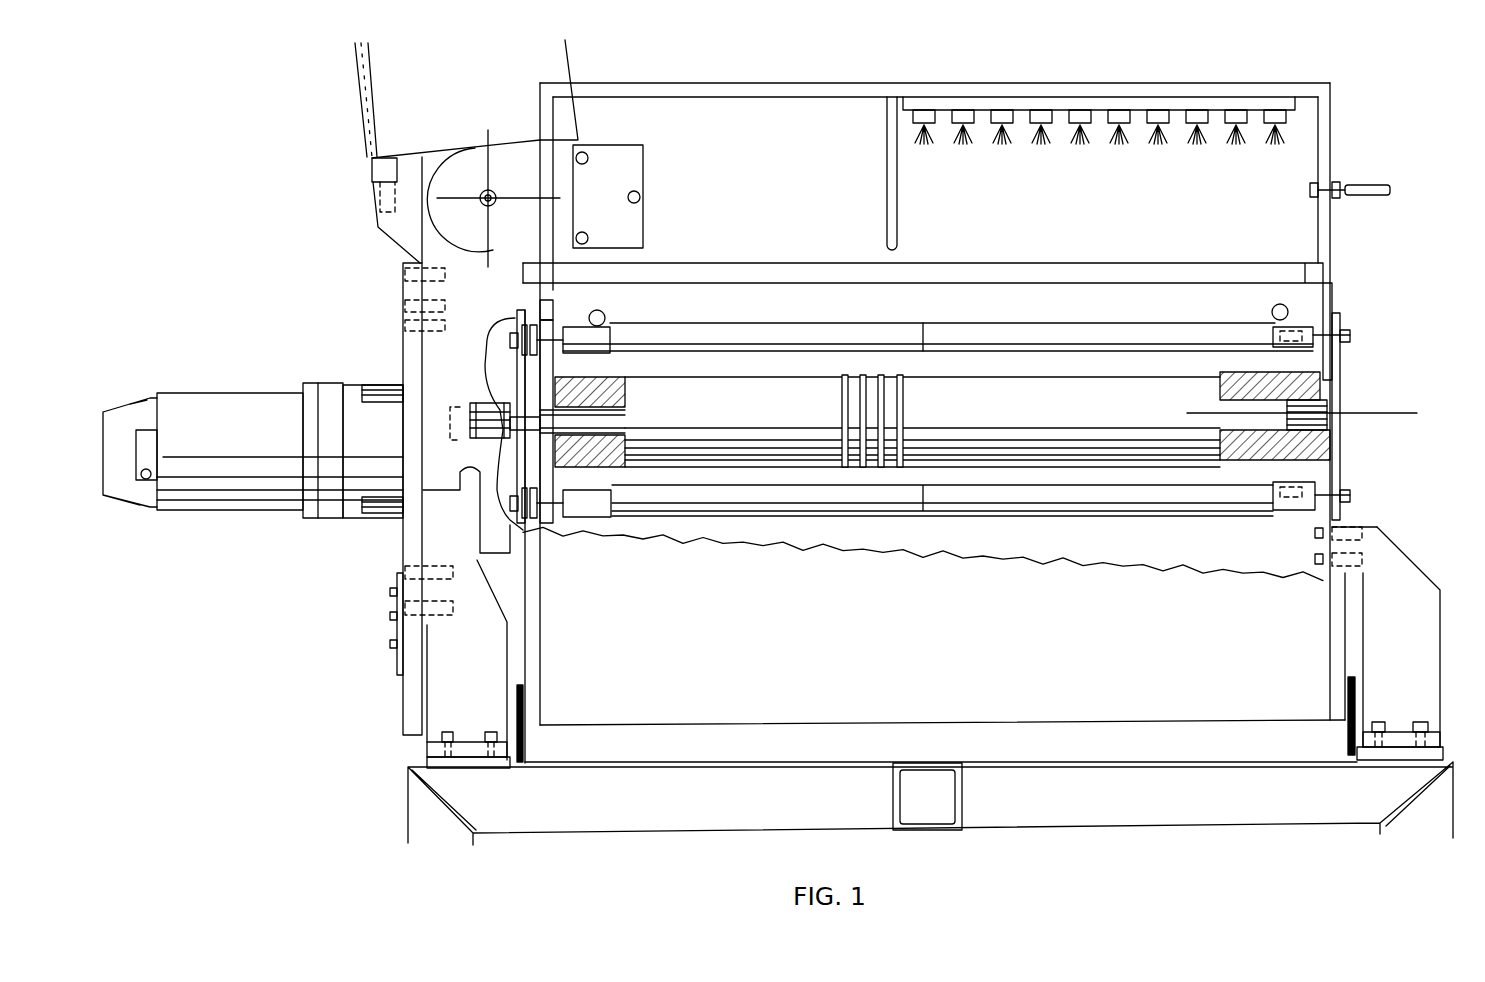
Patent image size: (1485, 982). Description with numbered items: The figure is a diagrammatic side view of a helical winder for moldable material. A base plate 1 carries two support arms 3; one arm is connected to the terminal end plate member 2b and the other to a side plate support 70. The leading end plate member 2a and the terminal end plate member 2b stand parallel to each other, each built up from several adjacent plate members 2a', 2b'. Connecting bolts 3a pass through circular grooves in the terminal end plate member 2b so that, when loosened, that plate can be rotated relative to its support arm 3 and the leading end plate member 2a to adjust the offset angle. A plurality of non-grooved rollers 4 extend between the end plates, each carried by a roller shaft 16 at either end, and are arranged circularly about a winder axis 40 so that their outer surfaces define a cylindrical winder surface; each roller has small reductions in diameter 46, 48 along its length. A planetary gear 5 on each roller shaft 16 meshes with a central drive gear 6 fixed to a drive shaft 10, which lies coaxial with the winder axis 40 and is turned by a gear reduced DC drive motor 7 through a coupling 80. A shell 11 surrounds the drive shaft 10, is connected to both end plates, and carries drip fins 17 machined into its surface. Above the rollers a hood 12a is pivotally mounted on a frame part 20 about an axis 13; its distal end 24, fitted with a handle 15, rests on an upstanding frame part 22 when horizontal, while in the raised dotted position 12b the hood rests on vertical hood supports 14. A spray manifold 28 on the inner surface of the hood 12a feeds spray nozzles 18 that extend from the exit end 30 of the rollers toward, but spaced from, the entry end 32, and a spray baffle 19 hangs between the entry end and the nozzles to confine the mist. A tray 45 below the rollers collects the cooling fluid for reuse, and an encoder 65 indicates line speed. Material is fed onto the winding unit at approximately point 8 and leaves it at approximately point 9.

The base plate 1 is at (618, 822).
The leading end plate member 2a is at (614, 460).
The plate members 2a' is at (630, 268).
The terminal end plate member 2b is at (1372, 416).
The plate members 2b' is at (1372, 331).
The support arms 3 is at (442, 708).
The connecting bolts 3a is at (400, 583).
The rollers 4 is at (1032, 328).
The planetary gear 5 is at (515, 318).
The central drive gear 6 is at (497, 397).
The drive motor 7 is at (195, 510).
The material feed point 8 is at (608, 313).
The material exit point 9 is at (1280, 303).
The drive shaft 10 is at (500, 418).
The shell 11 is at (1173, 380).
The hood 12a is at (863, 85).
The hood in pivoted position 12b is at (388, 127).
The pivot axis 13 is at (432, 178).
The hood supports 14 is at (367, 167).
The handle 15 is at (1392, 185).
The roller shaft 16 is at (1320, 330).
The drip fins 17 is at (893, 465).
The spray nozzles 18 is at (932, 130).
The spray baffle 19 is at (888, 200).
The frame part 20 is at (485, 197).
The upstanding frame part 22 is at (1330, 267).
The end of hood 24 is at (1327, 148).
The spray manifold 28 is at (1158, 102).
The exit end of rollers 30 is at (1295, 482).
The entry end of rollers 32 is at (578, 522).
The winder axis 40 is at (1408, 412).
The tray 45 is at (1320, 745).
The reduction in diameter 46 is at (612, 337).
The reduction in diameter 48 is at (927, 332).
The encoder 65 is at (398, 660).
The side plate support 70 is at (417, 693).
The coupling 80 is at (400, 388).